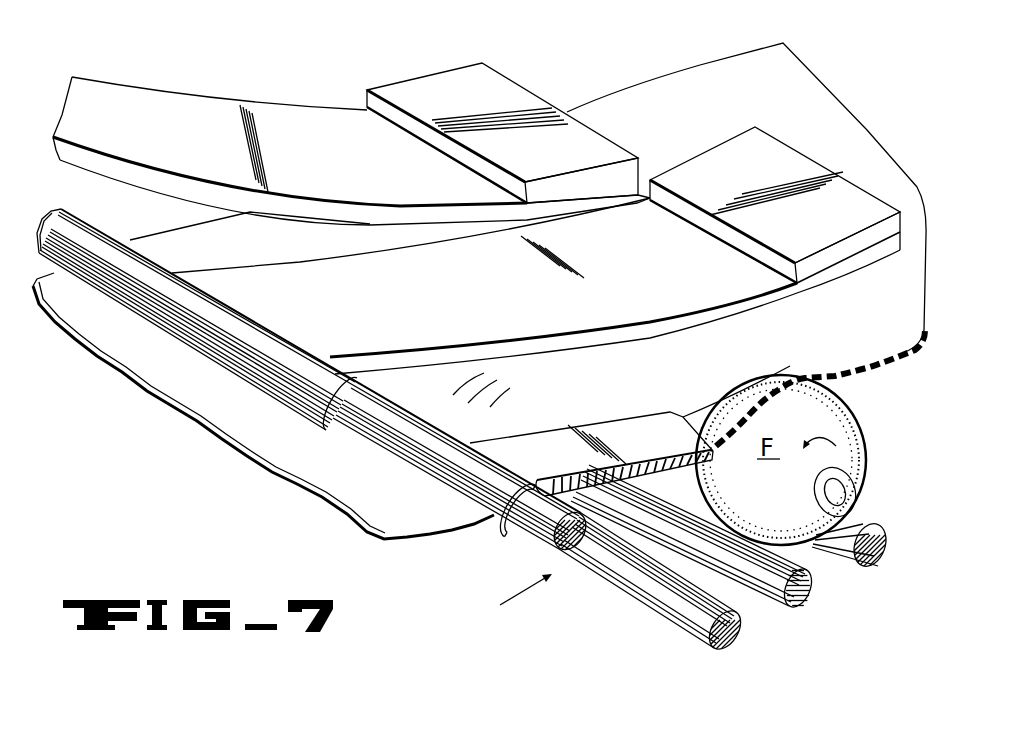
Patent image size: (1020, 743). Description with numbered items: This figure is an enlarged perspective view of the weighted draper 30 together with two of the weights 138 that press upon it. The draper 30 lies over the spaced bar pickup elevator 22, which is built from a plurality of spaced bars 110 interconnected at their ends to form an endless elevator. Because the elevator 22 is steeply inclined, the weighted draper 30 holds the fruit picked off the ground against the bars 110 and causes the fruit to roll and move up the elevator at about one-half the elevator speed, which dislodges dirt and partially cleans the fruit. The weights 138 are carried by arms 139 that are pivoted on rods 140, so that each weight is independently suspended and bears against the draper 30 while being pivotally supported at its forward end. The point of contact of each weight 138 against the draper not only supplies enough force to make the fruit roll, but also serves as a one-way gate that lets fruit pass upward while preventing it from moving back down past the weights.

The spaced bar pickup elevator 22 is at (616, 600).
The weighted draper 30 is at (240, 417).
The spaced bars 110 is at (782, 578).
The independently suspended weights 138 is at (722, 153).
The arms 139 is at (378, 199).
The rods 140 is at (547, 530).